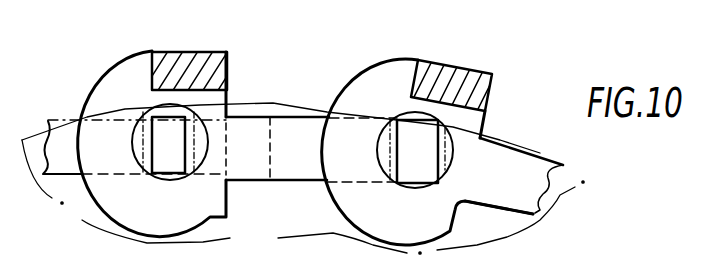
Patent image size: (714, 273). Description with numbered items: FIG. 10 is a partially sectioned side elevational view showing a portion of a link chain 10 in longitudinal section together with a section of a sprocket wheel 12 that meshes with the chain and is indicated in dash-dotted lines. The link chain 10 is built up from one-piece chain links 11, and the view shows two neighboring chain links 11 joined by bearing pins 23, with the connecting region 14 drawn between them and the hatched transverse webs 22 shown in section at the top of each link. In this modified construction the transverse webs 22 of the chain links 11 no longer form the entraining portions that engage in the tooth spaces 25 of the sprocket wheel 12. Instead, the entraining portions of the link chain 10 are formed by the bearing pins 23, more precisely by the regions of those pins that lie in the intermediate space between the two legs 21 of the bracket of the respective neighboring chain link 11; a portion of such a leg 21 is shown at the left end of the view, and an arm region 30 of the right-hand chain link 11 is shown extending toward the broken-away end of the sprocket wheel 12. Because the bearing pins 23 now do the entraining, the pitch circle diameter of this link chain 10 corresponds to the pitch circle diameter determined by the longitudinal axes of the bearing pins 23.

The link chain 10 is at (485, 215).
The chain link 11 is at (120, 61).
The sprocket wheel 12 is at (589, 174).
The connecting bar 14 is at (297, 165).
The leg 21 is at (94, 94).
The transverse web 22 is at (213, 72).
The bearing pin 23 is at (176, 160).
The tooth space 25 is at (163, 130).
The arm 30 is at (504, 158).